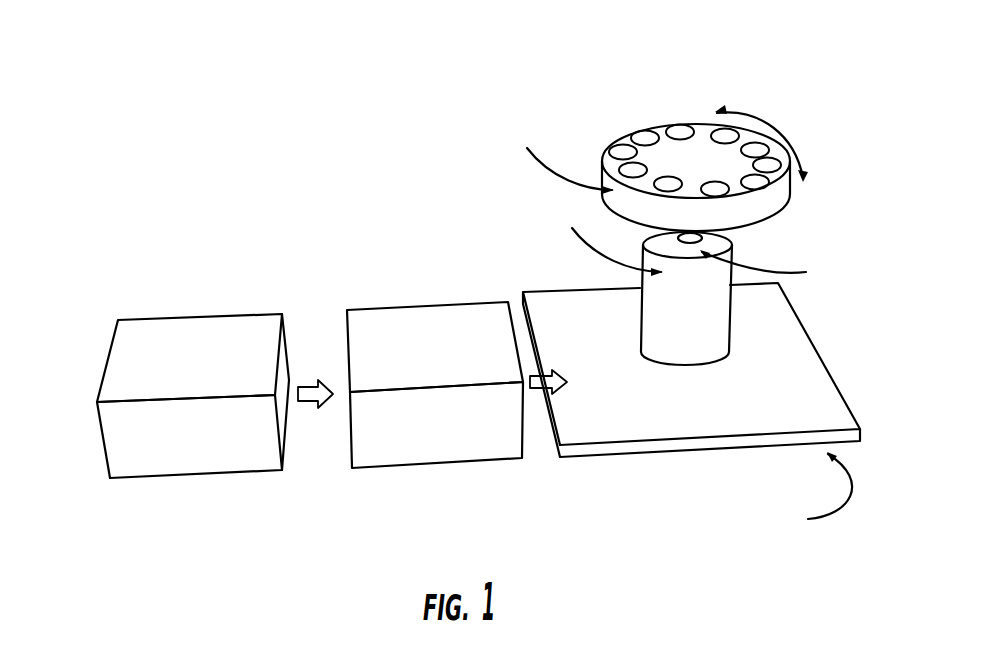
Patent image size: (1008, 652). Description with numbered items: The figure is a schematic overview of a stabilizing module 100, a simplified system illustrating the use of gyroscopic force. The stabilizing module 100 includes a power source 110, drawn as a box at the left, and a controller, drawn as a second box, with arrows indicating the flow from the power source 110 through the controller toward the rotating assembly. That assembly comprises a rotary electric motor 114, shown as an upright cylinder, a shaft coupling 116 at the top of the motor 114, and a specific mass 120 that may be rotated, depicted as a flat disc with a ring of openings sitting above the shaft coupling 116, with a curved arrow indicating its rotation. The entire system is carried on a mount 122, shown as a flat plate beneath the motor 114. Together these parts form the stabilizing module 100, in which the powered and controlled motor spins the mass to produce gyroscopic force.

The stabilizing module 100 is at (697, 85).
The power source 110 is at (122, 367).
The specific mass 120 is at (400, 307).
The rotary electric motor 114 is at (703, 327).
The shaft coupling 116 is at (702, 240).
The mount 122 is at (647, 432).